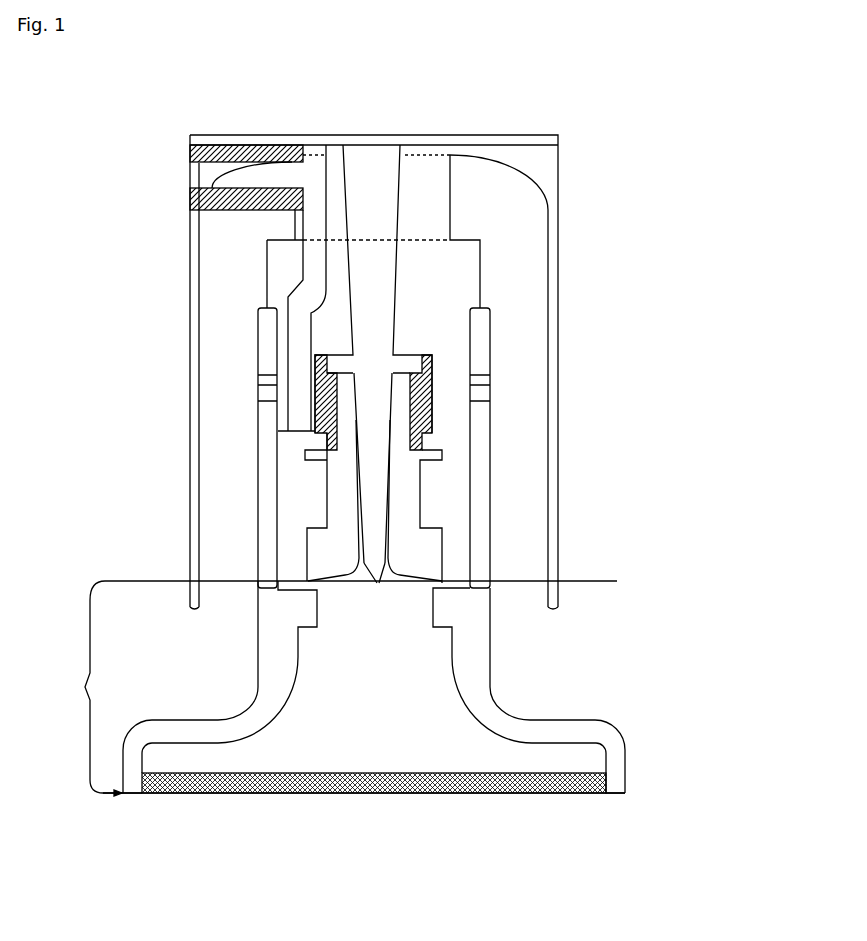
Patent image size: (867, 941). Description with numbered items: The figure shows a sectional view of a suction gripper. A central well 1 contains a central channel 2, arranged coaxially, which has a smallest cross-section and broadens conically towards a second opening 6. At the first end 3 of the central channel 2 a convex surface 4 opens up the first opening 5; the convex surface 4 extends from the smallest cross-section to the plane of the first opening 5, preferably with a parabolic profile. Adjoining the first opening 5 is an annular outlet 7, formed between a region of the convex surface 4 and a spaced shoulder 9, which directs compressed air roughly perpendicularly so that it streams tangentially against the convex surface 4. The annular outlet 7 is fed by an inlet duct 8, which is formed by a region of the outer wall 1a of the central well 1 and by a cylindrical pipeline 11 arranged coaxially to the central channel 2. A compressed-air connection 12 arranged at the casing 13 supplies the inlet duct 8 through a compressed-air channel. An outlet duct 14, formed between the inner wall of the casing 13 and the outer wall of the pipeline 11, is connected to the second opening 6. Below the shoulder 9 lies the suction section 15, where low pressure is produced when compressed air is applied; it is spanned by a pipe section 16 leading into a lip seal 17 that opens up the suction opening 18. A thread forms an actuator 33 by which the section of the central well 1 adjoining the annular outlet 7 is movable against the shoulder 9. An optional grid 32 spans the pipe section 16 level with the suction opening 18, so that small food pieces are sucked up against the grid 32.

The central well 1 is at (420, 327).
The outer wall of the central well 1a is at (424, 497).
The central channel 2 is at (372, 434).
The first end 3 is at (307, 552).
The convex surface 4 is at (386, 582).
The first opening 5 is at (372, 584).
The second opening 6 is at (344, 241).
The annular outlet 7 is at (368, 586).
The inlet duct 8 is at (300, 497).
The shoulder 9 is at (436, 594).
The pipeline 11 is at (472, 344).
The compressed-air connection 12 is at (199, 180).
The casing 13 is at (190, 253).
The outlet duct 14 is at (232, 302).
The suction section 15 is at (171, 688).
The pipe section 16 is at (552, 733).
The lip seal 17 is at (613, 797).
The suction opening 18 is at (353, 794).
The grid 32 is at (513, 788).
The actuator 33 is at (435, 410).